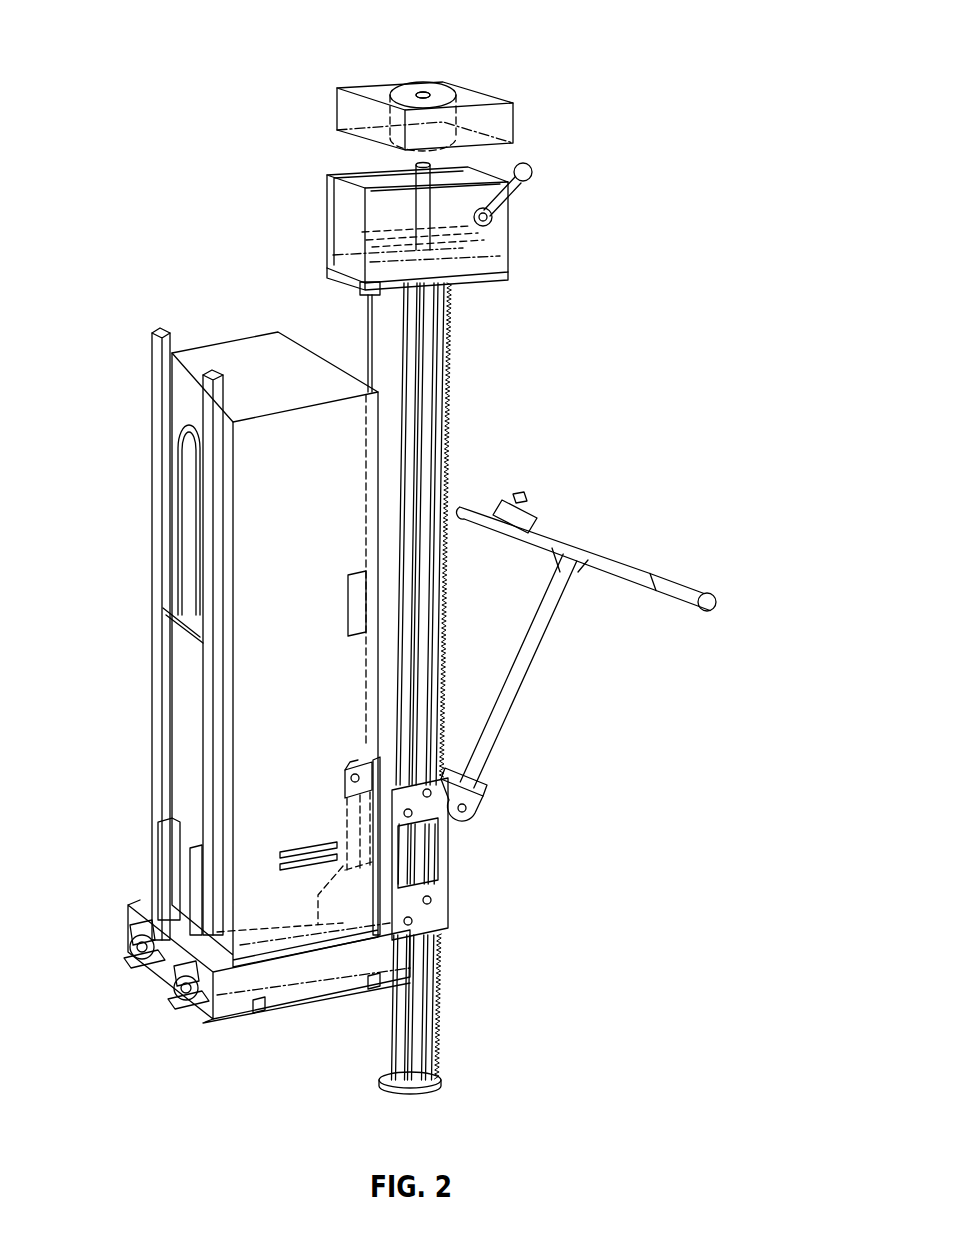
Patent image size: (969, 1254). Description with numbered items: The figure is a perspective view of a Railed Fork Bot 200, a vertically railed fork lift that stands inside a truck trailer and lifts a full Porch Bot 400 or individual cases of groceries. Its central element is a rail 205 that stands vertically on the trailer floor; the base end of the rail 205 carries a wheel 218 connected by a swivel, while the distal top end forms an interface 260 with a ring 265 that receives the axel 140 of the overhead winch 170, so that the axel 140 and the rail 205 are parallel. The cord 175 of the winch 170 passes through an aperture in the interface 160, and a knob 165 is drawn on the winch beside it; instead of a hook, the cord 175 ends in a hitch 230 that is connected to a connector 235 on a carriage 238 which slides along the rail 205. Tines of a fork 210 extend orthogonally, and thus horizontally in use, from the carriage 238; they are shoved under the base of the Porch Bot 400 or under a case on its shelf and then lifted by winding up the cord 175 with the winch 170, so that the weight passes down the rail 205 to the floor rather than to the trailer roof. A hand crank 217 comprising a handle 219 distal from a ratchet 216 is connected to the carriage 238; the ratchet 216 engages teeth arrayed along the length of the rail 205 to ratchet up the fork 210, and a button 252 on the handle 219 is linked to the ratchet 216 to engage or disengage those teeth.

The Railed Fork Bot 200 is at (163, 77).
The interface 260 is at (478, 92).
The ring 265 is at (405, 91).
The axel 140 is at (412, 217).
The handle knob 165 is at (532, 167).
The interface 160 is at (508, 210).
The winch 170 is at (488, 238).
The cord 175 is at (367, 331).
The rail 205 is at (433, 382).
The wheel 218 is at (446, 1083).
The ratchet 216 is at (482, 799).
The hand crank 217 is at (528, 660).
The handle 219 is at (638, 571).
The button 252 is at (516, 499).
The Porch Bot 400 is at (116, 502).
The fork 210 is at (126, 950).
The hitch 230 is at (360, 738).
The carriage 238 is at (350, 772).
The connector 235 is at (355, 781).